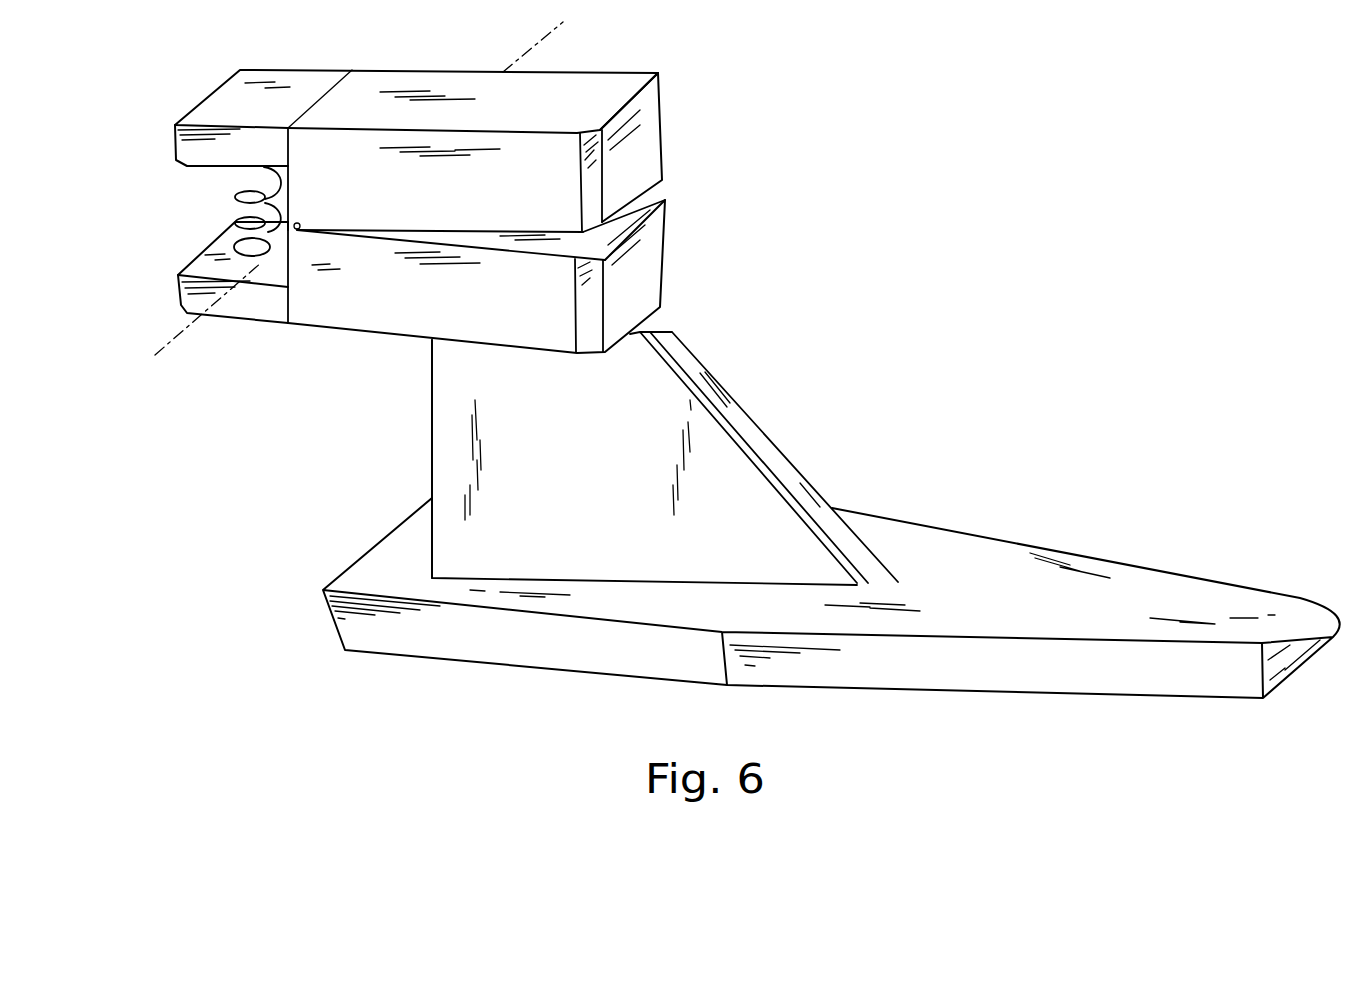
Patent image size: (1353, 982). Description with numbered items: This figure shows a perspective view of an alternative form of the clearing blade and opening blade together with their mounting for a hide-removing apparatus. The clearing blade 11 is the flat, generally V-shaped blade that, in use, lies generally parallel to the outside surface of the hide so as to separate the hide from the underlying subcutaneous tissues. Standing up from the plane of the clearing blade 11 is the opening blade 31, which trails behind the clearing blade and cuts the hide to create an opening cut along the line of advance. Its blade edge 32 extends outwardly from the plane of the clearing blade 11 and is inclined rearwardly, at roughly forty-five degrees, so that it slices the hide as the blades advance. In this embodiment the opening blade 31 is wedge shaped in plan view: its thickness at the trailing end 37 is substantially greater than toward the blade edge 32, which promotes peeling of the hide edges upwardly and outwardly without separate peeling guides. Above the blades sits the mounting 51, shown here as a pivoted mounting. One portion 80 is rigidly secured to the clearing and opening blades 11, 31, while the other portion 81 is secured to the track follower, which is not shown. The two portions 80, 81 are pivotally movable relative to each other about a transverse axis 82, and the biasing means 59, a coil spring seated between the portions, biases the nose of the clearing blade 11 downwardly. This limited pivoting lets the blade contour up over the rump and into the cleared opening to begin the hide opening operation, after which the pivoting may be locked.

The clearing blade 11 is at (1122, 587).
The opening blade 31 is at (643, 463).
The blade edge 32 is at (807, 480).
The trailing end 37 is at (450, 435).
The mounting 51 is at (702, 197).
The biasing means 59 is at (237, 199).
The mounting portion 80 is at (342, 303).
The mounting portion 81 is at (640, 150).
The transverse axis 82 is at (178, 330).